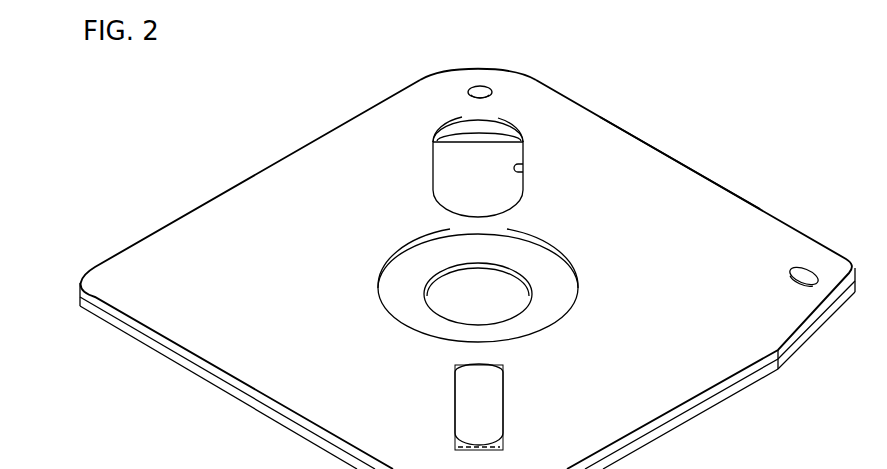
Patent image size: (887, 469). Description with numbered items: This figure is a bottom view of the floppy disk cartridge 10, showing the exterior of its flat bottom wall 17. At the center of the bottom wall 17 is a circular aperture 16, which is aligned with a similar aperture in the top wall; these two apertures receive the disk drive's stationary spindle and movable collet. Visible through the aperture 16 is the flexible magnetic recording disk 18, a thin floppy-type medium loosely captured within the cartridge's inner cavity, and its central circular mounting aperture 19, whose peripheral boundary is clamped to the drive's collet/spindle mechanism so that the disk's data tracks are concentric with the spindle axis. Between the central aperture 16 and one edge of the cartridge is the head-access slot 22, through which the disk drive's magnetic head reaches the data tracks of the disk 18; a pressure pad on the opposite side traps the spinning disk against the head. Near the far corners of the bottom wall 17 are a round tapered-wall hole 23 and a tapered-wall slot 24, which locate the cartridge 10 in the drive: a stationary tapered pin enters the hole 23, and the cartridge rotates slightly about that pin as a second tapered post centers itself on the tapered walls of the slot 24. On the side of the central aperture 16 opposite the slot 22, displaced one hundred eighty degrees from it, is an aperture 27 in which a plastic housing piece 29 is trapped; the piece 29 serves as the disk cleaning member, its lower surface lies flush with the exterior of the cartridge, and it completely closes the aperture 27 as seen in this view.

The cartridge 10 is at (289, 116).
The aperture 16 is at (407, 318).
The flat bottom wall 17 is at (662, 173).
The flexible magnetic recording disk 18 is at (455, 173).
The mounting aperture 19 is at (455, 320).
The slot 22 is at (525, 166).
The tapered-wall hole 23 is at (478, 88).
The tapered-wall slot 24 is at (797, 282).
The aperture 27 is at (504, 410).
The plastic housing piece 29 is at (468, 410).